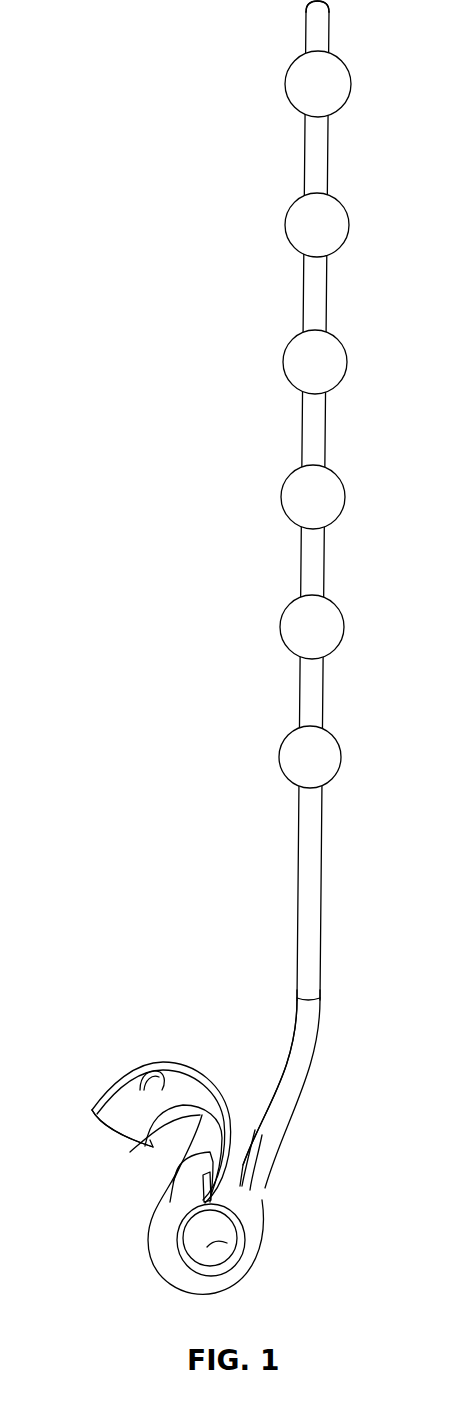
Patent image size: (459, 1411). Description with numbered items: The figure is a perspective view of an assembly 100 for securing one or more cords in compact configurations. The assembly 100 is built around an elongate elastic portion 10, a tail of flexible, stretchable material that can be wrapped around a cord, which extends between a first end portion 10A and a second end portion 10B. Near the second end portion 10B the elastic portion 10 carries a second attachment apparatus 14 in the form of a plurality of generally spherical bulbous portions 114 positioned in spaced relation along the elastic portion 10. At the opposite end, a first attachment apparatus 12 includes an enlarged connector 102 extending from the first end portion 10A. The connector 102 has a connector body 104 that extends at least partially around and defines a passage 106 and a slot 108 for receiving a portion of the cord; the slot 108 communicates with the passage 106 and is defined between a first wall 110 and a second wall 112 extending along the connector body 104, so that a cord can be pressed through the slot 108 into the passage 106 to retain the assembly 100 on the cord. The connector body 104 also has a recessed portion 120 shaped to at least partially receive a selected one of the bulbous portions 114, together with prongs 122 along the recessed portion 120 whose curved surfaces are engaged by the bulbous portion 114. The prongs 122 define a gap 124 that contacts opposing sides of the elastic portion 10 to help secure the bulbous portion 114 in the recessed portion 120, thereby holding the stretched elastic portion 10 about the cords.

The assembly 100 is at (170, 220).
The elastic portion 10 is at (300, 433).
The first end portion 10A is at (250, 1098).
The second end portion 10B is at (307, 18).
The second attachment apparatus 14 is at (211, 564).
The bulbous portions 114 is at (327, 82).
The first attachment apparatus 12 is at (106, 1075).
The connector 102 is at (181, 1175).
The connector body 104 is at (216, 1295).
The passage 106 is at (218, 1240).
The slot 108 is at (223, 1193).
The first wall 110 is at (252, 1185).
The second wall 112 is at (202, 1207).
The recessed portion 120 is at (163, 1148).
The prongs 122 is at (92, 1110).
The gap 124 is at (140, 1087).